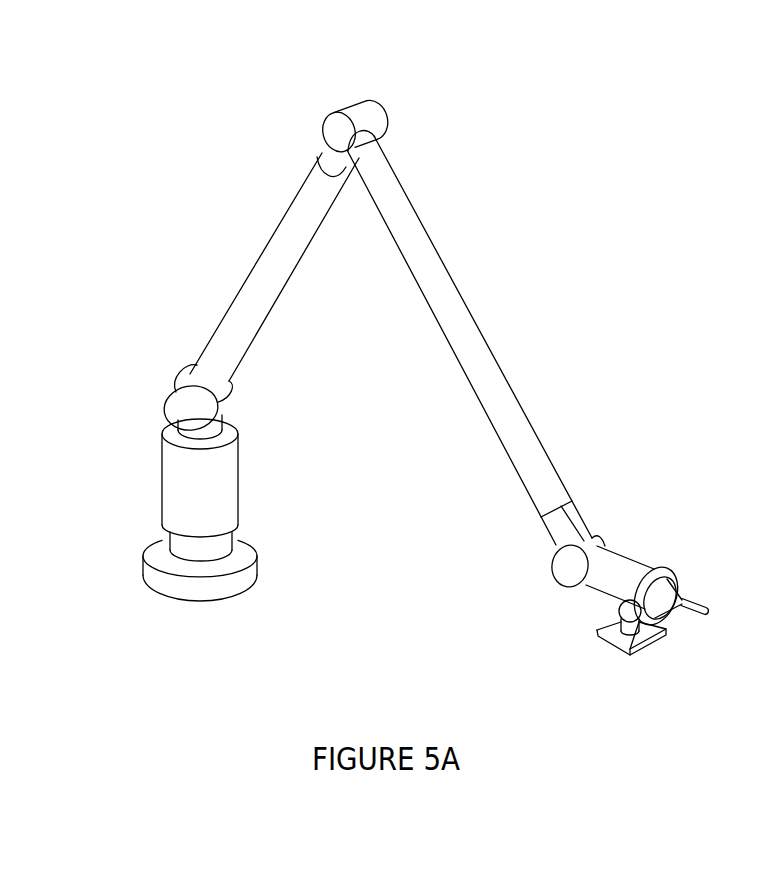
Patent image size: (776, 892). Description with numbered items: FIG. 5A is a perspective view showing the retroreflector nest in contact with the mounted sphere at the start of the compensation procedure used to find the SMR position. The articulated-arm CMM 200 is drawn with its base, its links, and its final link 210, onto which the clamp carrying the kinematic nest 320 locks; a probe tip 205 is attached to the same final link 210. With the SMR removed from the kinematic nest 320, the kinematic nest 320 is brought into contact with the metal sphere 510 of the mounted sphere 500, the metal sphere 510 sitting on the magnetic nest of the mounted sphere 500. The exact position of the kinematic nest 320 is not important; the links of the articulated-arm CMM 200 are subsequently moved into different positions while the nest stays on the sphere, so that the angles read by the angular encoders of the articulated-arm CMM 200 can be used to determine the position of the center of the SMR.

The articulated-arm CMM 200 is at (292, 122).
The final link 210 is at (622, 556).
The probe tip 205 is at (711, 612).
The kinematic nest 320 is at (618, 610).
The metal sphere 510 is at (582, 662).
The mounted sphere 500 is at (594, 650).